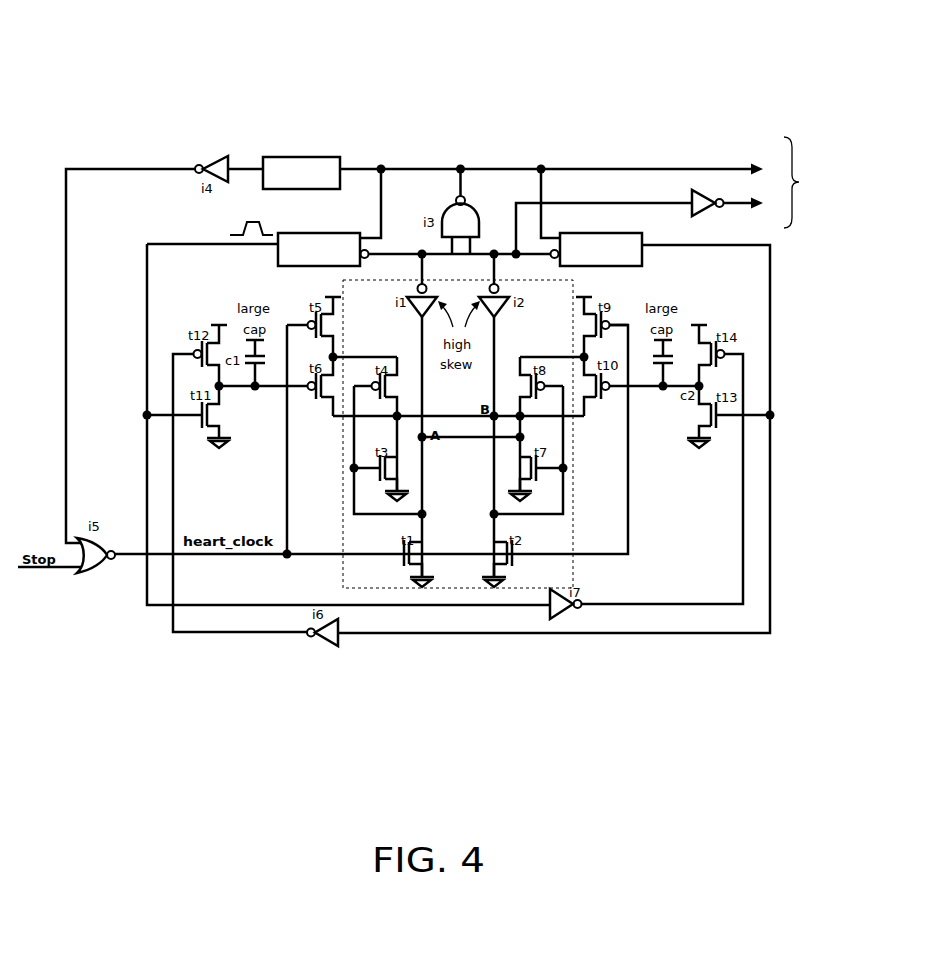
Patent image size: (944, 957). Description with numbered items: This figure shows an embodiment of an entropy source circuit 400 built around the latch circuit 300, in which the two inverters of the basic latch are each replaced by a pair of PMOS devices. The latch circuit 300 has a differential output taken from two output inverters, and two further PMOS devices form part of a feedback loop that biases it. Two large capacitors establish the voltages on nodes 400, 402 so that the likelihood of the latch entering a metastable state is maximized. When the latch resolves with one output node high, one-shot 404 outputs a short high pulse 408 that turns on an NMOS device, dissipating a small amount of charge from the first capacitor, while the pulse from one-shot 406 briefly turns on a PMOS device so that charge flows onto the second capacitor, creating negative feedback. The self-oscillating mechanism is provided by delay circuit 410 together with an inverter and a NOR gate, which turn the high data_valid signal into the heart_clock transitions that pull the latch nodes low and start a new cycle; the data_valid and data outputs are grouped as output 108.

The entropy source circuit 400 is at (255, 390).
The node 402 is at (663, 390).
The one-shot 404 is at (298, 230).
The one-shot 406 is at (577, 230).
The high pulse 408 is at (246, 211).
The delay circuit 410 is at (298, 153).
The latch circuit 300 is at (386, 338).
The output signals 108 is at (800, 165).